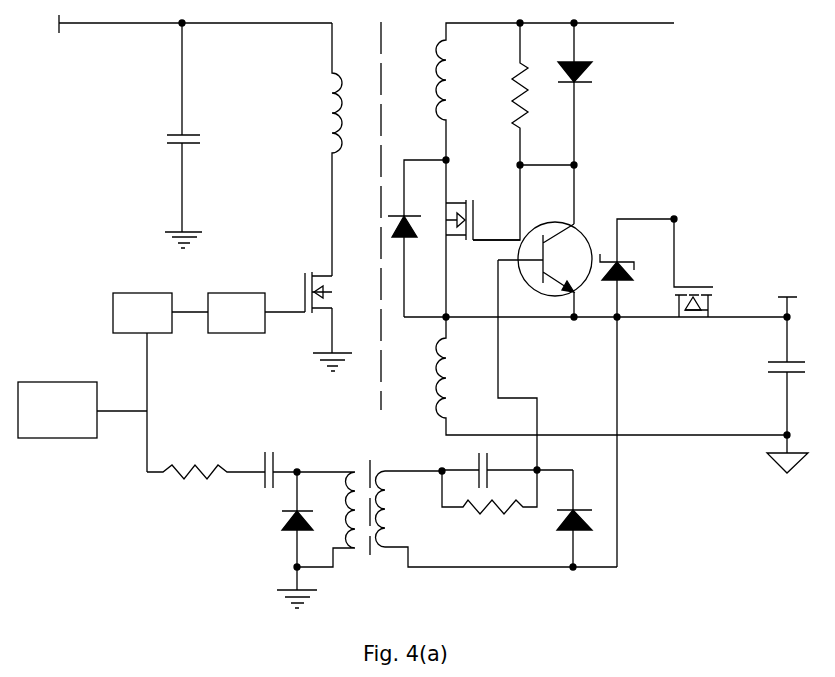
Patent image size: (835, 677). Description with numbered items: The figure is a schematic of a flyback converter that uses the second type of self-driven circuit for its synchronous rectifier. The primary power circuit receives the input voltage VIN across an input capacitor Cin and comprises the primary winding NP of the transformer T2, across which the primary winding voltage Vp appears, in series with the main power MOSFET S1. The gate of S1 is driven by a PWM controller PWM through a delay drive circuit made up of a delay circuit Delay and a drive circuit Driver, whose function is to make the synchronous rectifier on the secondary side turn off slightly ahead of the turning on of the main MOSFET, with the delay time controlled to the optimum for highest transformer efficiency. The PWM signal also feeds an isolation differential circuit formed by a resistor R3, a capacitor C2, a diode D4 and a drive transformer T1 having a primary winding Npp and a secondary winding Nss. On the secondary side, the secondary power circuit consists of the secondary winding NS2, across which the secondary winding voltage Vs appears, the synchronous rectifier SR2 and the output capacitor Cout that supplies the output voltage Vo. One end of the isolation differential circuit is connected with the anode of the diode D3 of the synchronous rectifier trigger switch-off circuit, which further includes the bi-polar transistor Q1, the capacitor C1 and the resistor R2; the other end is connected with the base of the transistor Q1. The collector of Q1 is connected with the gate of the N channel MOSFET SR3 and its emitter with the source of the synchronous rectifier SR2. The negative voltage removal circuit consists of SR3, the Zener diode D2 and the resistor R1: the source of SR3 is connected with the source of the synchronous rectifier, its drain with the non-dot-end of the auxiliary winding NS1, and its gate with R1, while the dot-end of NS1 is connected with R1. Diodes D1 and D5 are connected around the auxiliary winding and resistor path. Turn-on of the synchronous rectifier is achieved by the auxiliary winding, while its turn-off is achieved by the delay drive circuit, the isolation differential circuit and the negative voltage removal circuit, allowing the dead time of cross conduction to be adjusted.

The input voltage VIN is at (180, 24).
The input capacitor Cin is at (203, 135).
The primary winding NP is at (352, 149).
The primary winding voltage Vp is at (313, 122).
The transformer T2 is at (394, 216).
The main power MOSFET S1 is at (308, 319).
The delay circuit Delay is at (160, 382).
The drive circuit Driver is at (236, 313).
The PWM controller PWM is at (82, 410).
The resistor R3 is at (206, 452).
The capacitor C2 is at (279, 457).
The diode D4 is at (280, 540).
The primary winding of drive transformer Npp is at (326, 519).
The drive transformer T1 is at (367, 496).
The secondary winding of drive transformer Nss is at (496, 519).
The capacitor C1 is at (507, 463).
The resistor R2 is at (489, 505).
The diode D3 is at (559, 518).
The secondary winding NS2 is at (592, 376).
The secondary winding voltage Vs is at (494, 365).
The auxiliary winding NS1 is at (555, 170).
The resistor R1 is at (523, 131).
The diode D1 is at (591, 123).
The diode D5 is at (417, 238).
The N channel MOSFET SR3 is at (483, 210).
The bi-polar transistor Q1 is at (545, 269).
The Zener diode D2 is at (637, 393).
The synchronous rectifier SR2 is at (694, 284).
The output voltage Vo is at (787, 298).
The output capacitor Cout is at (762, 395).